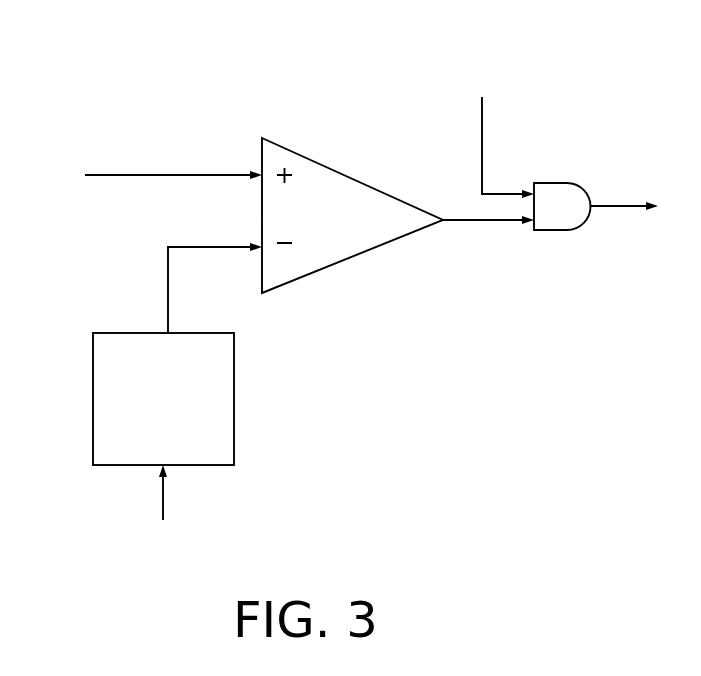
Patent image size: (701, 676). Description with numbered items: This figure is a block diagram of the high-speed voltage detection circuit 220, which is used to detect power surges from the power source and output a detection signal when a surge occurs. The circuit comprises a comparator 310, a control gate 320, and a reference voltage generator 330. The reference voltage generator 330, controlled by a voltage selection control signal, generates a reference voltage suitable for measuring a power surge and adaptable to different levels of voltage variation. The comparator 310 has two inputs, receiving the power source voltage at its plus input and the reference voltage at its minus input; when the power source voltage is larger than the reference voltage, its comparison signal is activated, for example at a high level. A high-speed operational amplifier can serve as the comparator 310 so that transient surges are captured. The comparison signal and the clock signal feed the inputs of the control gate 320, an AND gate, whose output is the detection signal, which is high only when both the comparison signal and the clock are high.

The high-speed voltage detection circuit 220 is at (437, 35).
The comparator 310 is at (377, 248).
The control gate 320 is at (585, 222).
The reference voltage generator 330 is at (234, 392).